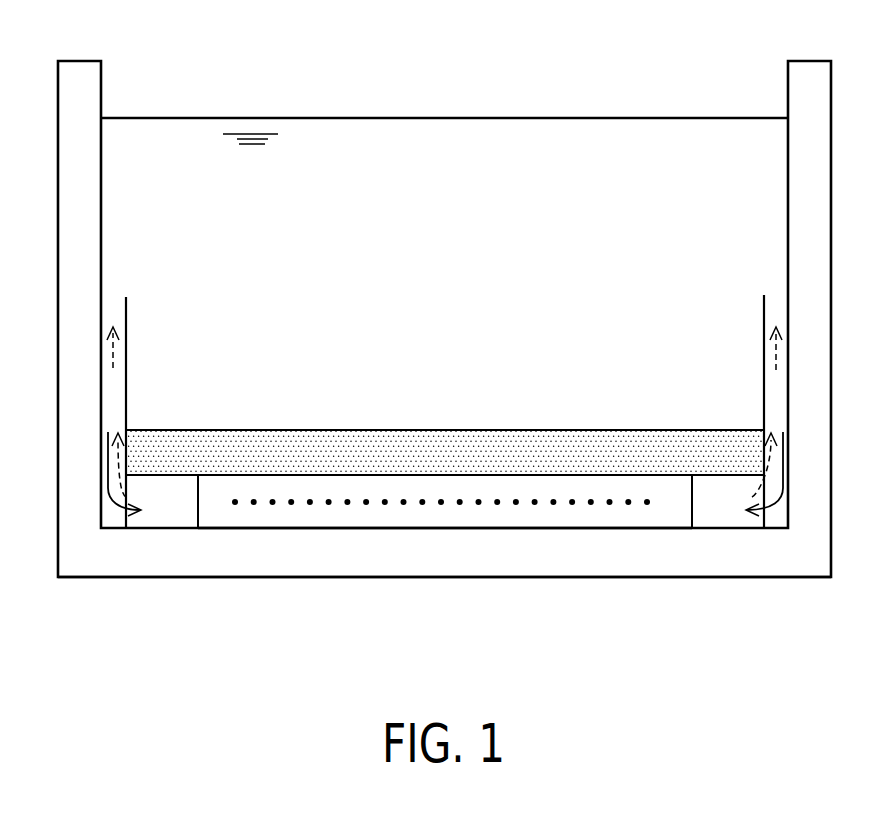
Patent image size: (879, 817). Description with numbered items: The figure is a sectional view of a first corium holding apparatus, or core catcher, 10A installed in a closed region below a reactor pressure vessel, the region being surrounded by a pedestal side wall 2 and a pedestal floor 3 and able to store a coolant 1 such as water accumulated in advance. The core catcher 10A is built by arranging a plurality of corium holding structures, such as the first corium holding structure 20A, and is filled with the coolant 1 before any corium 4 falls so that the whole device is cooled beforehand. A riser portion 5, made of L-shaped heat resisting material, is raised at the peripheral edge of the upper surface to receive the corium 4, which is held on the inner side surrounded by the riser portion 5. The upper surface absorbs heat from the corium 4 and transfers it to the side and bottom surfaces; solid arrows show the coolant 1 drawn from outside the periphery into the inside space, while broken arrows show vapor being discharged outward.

The coolant 1 is at (514, 156).
The pedestal side wall 2 is at (58, 135).
The pedestal floor 3 is at (593, 565).
The corium 4 is at (506, 437).
The riser portion 5 is at (764, 341).
The first corium holding apparatus 10A is at (133, 318).
The first corium holding structure 20A is at (172, 513).